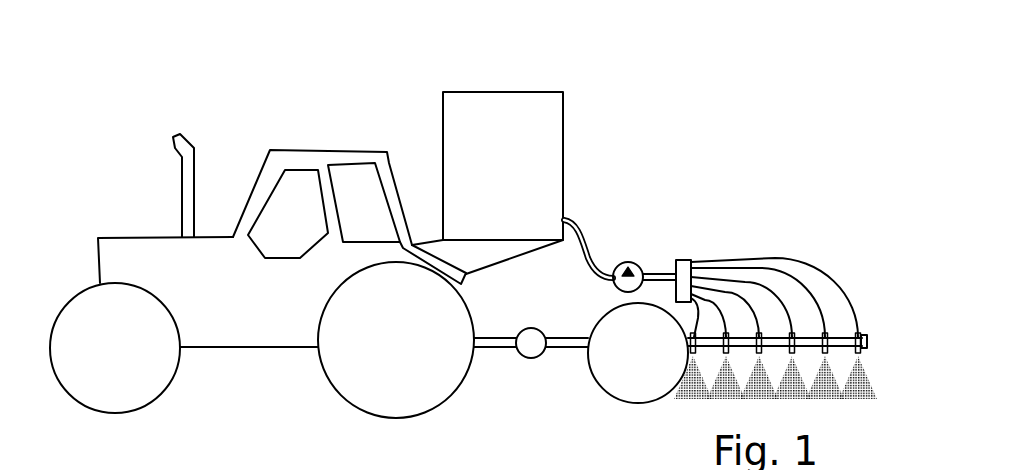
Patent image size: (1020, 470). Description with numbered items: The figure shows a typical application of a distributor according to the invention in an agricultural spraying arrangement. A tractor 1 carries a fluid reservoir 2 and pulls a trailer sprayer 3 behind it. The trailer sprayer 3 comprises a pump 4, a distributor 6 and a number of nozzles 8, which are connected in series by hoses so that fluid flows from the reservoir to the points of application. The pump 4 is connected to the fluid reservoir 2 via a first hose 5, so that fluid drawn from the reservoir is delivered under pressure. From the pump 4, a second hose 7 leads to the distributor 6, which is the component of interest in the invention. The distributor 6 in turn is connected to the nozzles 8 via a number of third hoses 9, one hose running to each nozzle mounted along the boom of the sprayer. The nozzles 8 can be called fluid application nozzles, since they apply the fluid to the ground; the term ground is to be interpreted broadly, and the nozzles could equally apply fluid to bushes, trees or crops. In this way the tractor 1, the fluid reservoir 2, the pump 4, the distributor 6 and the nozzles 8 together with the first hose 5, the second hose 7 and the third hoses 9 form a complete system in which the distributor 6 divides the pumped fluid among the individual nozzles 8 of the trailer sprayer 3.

The tractor 1 is at (133, 257).
The fluid reservoir 2 is at (518, 102).
The trailer sprayer 3 is at (742, 286).
The pump 4 is at (621, 263).
The first hose 5 is at (573, 217).
The distributor 6 is at (686, 258).
The second hose 7 is at (660, 273).
The nozzles 8 is at (863, 334).
The third hoses 9 is at (840, 282).